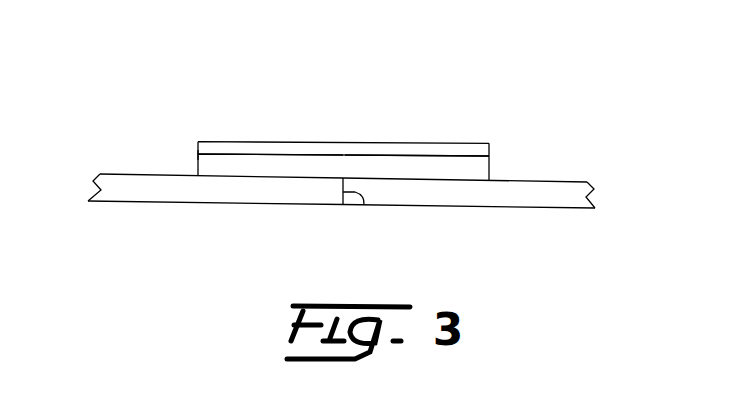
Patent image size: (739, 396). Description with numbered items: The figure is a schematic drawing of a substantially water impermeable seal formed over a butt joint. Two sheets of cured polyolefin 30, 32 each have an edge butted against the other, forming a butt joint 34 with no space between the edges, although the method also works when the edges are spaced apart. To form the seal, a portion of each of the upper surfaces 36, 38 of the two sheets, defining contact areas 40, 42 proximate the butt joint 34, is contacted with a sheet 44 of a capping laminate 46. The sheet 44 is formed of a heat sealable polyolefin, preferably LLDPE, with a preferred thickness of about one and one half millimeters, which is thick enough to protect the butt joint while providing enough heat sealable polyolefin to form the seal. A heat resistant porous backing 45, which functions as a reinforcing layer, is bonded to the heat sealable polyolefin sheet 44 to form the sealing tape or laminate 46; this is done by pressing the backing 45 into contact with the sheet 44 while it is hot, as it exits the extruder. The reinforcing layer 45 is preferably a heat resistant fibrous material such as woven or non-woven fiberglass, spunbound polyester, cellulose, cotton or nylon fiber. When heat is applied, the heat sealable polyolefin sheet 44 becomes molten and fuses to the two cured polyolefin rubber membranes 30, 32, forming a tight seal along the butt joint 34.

The sheet of cured polyolefin 30 is at (236, 188).
The sheet of cured polyolefin 32 is at (523, 195).
The butt joint 34 is at (363, 205).
The upper surface 36 is at (127, 180).
The upper surface 38 is at (558, 180).
The contact area 40 is at (343, 130).
The contact area 42 is at (345, 116).
The heat sealable polyolefin sheet 44 is at (490, 170).
The heat resistant porous backing 45 is at (196, 141).
The capping laminate 46 is at (198, 156).